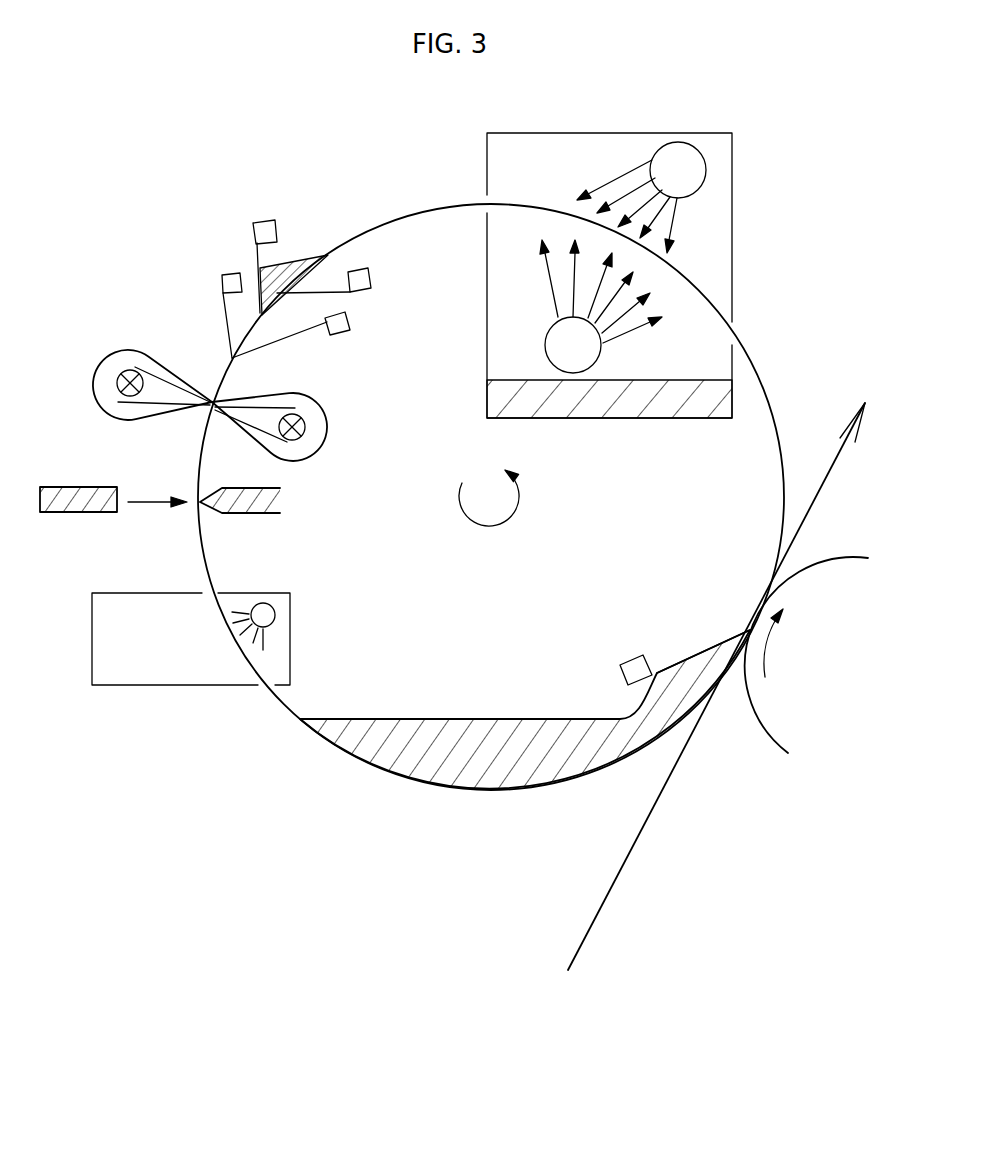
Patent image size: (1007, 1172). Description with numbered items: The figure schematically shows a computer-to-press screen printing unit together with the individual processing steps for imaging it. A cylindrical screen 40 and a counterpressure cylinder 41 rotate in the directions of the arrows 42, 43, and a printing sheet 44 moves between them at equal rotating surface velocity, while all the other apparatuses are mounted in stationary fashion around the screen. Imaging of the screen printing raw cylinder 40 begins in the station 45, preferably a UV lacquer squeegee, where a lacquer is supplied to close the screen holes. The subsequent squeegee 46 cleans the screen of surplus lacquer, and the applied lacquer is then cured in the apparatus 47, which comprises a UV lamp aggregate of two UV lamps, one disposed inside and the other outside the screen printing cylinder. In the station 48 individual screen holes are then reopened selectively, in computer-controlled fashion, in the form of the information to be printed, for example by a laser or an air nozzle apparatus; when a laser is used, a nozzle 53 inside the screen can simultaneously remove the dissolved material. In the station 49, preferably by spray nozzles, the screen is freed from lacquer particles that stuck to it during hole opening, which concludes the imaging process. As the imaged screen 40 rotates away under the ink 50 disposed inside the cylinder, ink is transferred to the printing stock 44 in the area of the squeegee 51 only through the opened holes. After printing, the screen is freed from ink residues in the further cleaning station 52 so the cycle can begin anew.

The cylindrical screen 40 is at (277, 735).
The counterpressure cylinder 41 is at (762, 727).
The arrow (rotation direction of screen) 42 is at (497, 528).
The arrow (rotation direction of counterpressure cylinder) 43 is at (765, 663).
The printing sheet 44 is at (622, 870).
The lacquer supply station 45 is at (270, 251).
The squeegee 46 is at (223, 312).
The curing apparatus 47 is at (110, 353).
The hole-opening station 48 is at (82, 497).
The cleaning station 49 is at (122, 675).
The ink 50 is at (455, 775).
The squeegee (ink) 51 is at (678, 660).
The further cleaning station 52 is at (718, 237).
The nozzle 53 is at (250, 510).